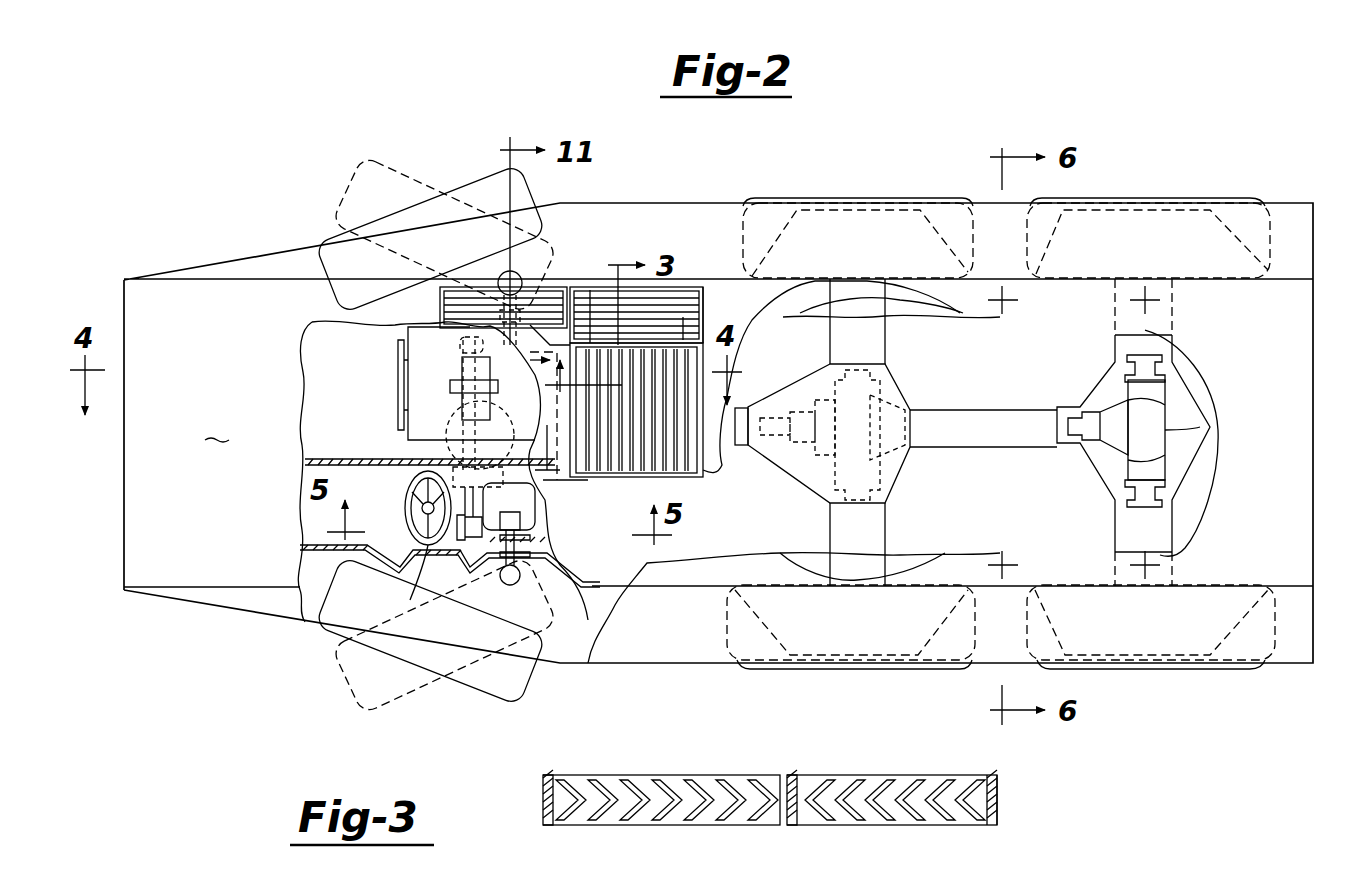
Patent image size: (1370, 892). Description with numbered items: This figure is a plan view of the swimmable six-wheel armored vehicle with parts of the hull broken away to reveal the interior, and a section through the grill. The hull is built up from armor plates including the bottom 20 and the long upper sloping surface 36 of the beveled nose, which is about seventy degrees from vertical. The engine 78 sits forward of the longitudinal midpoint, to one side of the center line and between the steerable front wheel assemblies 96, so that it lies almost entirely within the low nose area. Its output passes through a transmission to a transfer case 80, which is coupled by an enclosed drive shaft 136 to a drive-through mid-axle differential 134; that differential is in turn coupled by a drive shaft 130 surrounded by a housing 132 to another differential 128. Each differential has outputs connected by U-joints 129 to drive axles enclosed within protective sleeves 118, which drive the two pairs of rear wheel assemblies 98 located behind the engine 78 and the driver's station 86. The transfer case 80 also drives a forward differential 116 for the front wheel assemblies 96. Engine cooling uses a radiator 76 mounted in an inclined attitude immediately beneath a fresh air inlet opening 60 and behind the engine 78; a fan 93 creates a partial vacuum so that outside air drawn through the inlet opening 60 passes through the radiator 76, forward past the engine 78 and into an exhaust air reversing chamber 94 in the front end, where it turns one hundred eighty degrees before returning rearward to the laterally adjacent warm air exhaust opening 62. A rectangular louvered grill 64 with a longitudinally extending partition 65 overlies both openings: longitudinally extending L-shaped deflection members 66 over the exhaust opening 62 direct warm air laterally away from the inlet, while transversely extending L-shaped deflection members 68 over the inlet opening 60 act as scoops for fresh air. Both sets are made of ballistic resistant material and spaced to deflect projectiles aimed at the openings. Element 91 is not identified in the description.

In FIG. 2, the bottom 20 is at (1272, 540).
In FIG. 2, the upper sloping surface 36 is at (216, 425).
In FIG. 2, the fresh air inlet opening 60 is at (626, 452).
In FIG. 2, the warm air exhaust opening 62 is at (700, 315).
In FIG. 2, the louvered grill 64 is at (462, 303).
In FIG. 3, the louvered grill 64 is at (770, 794).
In FIG. 2, the partition 65 is at (590, 343).
In FIG. 2, the deflection members 66 is at (683, 317).
In FIG. 3, the deflection members 66 is at (948, 825).
In FIG. 2, the deflection members 68 is at (702, 460).
In FIG. 3, the deflection members 68 is at (698, 775).
In FIG. 2, the radiator 76 is at (547, 425).
In FIG. 2, the engine 78 is at (442, 394).
In FIG. 2, the transfer case 80 is at (560, 530).
In FIG. 2, the driver's station 86 is at (395, 502).
In FIG. 2, the steering column 91 is at (428, 545).
In FIG. 2, the fan 93 is at (395, 353).
In FIG. 2, the exhaust air reversing chamber 94 is at (362, 408).
In FIG. 2, the front wheel assemblies 96 is at (487, 682).
In FIG. 2, the rear wheel assemblies 98 is at (866, 206).
In FIG. 2, the forward differential 116 is at (403, 450).
In FIG. 2, the protective sleeves 118 is at (875, 540).
In FIG. 2, the differential 128 is at (1160, 445).
In FIG. 2, the U-joints 129 is at (1148, 372).
In FIG. 2, the drive shaft 130 is at (1040, 428).
In FIG. 2, the housing 132 is at (1000, 438).
In FIG. 2, the mid-axle differential 134 is at (877, 412).
In FIG. 2, the enclosed drive shaft 136 is at (851, 377).